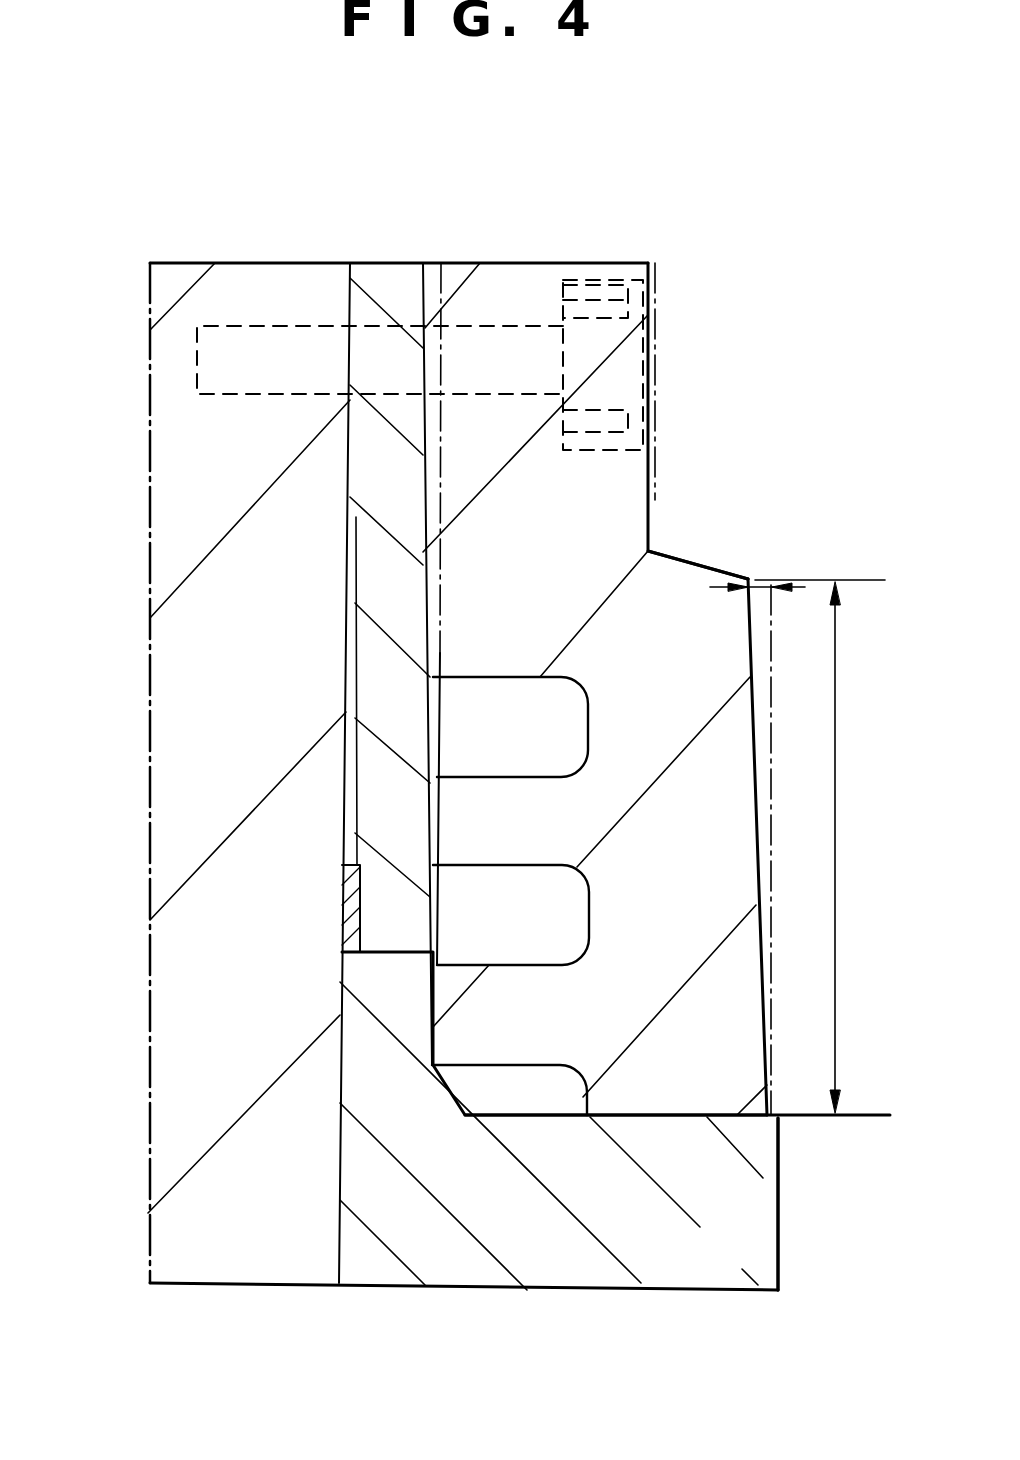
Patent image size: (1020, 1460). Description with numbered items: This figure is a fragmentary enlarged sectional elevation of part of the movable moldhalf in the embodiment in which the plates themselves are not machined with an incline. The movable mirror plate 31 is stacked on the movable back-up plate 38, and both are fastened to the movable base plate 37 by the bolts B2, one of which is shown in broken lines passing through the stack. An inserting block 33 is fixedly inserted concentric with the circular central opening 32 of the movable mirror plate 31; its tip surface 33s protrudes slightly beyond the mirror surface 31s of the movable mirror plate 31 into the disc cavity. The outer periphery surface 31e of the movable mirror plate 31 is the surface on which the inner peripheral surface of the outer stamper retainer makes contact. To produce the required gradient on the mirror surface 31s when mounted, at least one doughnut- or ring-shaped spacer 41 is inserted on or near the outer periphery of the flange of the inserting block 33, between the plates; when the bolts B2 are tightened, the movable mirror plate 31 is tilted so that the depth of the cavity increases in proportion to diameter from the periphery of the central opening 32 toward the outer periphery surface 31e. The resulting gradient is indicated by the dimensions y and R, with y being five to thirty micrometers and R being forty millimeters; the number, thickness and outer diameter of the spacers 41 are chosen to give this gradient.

The bolts B2 is at (505, 347).
The movable mirror plate 31 is at (657, 587).
The outer periphery surface 31e is at (709, 568).
The mirror surface 31s is at (766, 850).
The circular central opening 32 is at (666, 1120).
The inserting block 33 is at (762, 1190).
The tip surface 33s is at (777, 1230).
The movable base plate 37 is at (210, 730).
The movable back-up plate 38 is at (375, 570).
The spacer 41 is at (348, 920).
The radial distance R is at (820, 846).
The gradient height y is at (758, 580).